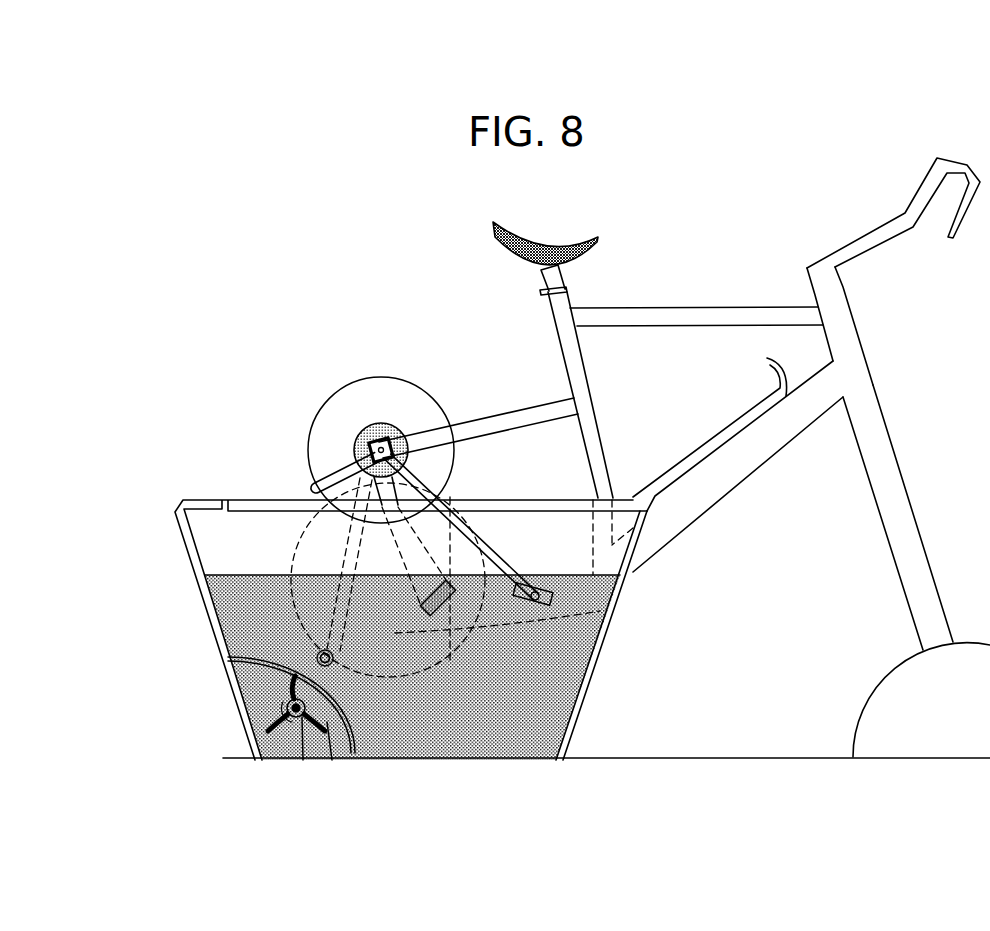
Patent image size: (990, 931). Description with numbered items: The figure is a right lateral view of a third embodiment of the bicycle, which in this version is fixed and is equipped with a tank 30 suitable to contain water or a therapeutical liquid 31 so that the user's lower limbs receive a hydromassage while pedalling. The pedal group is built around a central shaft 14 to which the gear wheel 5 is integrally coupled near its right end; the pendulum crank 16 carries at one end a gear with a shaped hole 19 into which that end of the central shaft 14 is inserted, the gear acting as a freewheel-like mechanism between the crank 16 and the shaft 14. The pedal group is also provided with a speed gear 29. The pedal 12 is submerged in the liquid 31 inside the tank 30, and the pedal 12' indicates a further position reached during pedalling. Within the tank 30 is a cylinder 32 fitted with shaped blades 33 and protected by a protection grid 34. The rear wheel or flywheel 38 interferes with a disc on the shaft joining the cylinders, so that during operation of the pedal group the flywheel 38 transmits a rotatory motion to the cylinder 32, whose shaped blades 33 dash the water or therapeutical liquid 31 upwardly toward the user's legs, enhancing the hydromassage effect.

The gear wheel 5 is at (373, 387).
The shaped hole 19 is at (363, 435).
The central shaft 14 is at (430, 425).
The right crank 16 is at (350, 580).
The rear wheel or flywheel 38 is at (297, 552).
The tank 30 is at (208, 550).
The water or therapeutical liquid 31 is at (562, 665).
The pedal 12 is at (291, 602).
The speed gear 29 is at (465, 590).
The pedal 12' is at (548, 568).
The protection grid 34 is at (232, 647).
The shaped blades 33 is at (268, 732).
The cylinder 32 is at (303, 762).